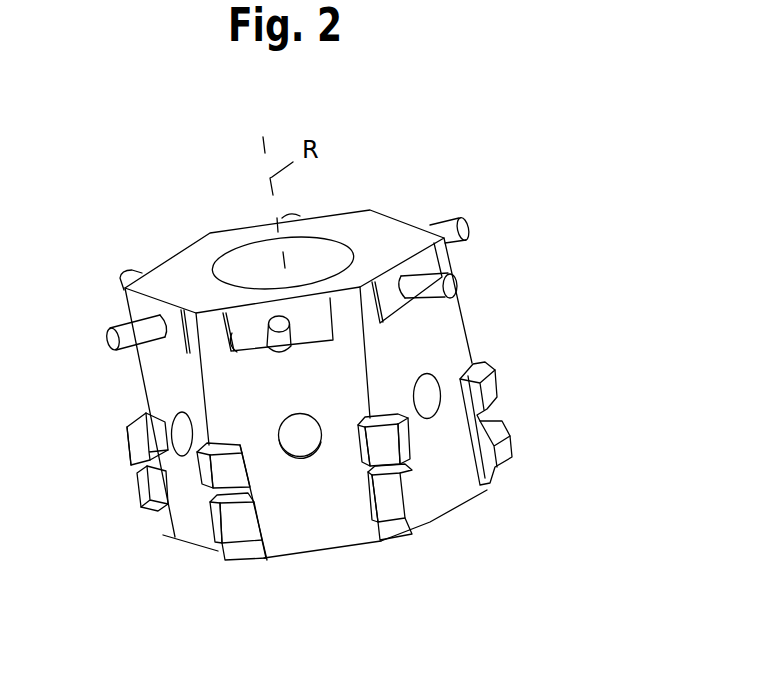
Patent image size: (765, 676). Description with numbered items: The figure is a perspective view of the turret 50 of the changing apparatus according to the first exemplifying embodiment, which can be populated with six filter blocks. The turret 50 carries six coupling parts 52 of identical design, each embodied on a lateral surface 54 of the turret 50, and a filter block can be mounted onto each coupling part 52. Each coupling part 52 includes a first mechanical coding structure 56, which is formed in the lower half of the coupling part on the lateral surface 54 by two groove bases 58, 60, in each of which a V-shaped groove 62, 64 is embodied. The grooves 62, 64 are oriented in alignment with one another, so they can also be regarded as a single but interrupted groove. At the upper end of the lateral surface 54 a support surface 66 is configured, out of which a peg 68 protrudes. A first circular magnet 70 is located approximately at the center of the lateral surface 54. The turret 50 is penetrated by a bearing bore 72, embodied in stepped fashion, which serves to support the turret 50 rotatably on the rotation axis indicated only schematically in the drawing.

The turret 50 is at (540, 253).
The coupling part 52 is at (360, 567).
The lateral surface 54 is at (343, 318).
The first mechanical coding structure 56 is at (413, 546).
The groove base 58 is at (220, 490).
The groove base 60 is at (380, 453).
The V-shaped groove 62 is at (238, 502).
The V-shaped groove 64 is at (382, 470).
The support surface 66 is at (277, 350).
The peg 68 is at (262, 366).
The first circular magnet 70 is at (308, 453).
The bearing bore 72 is at (247, 262).